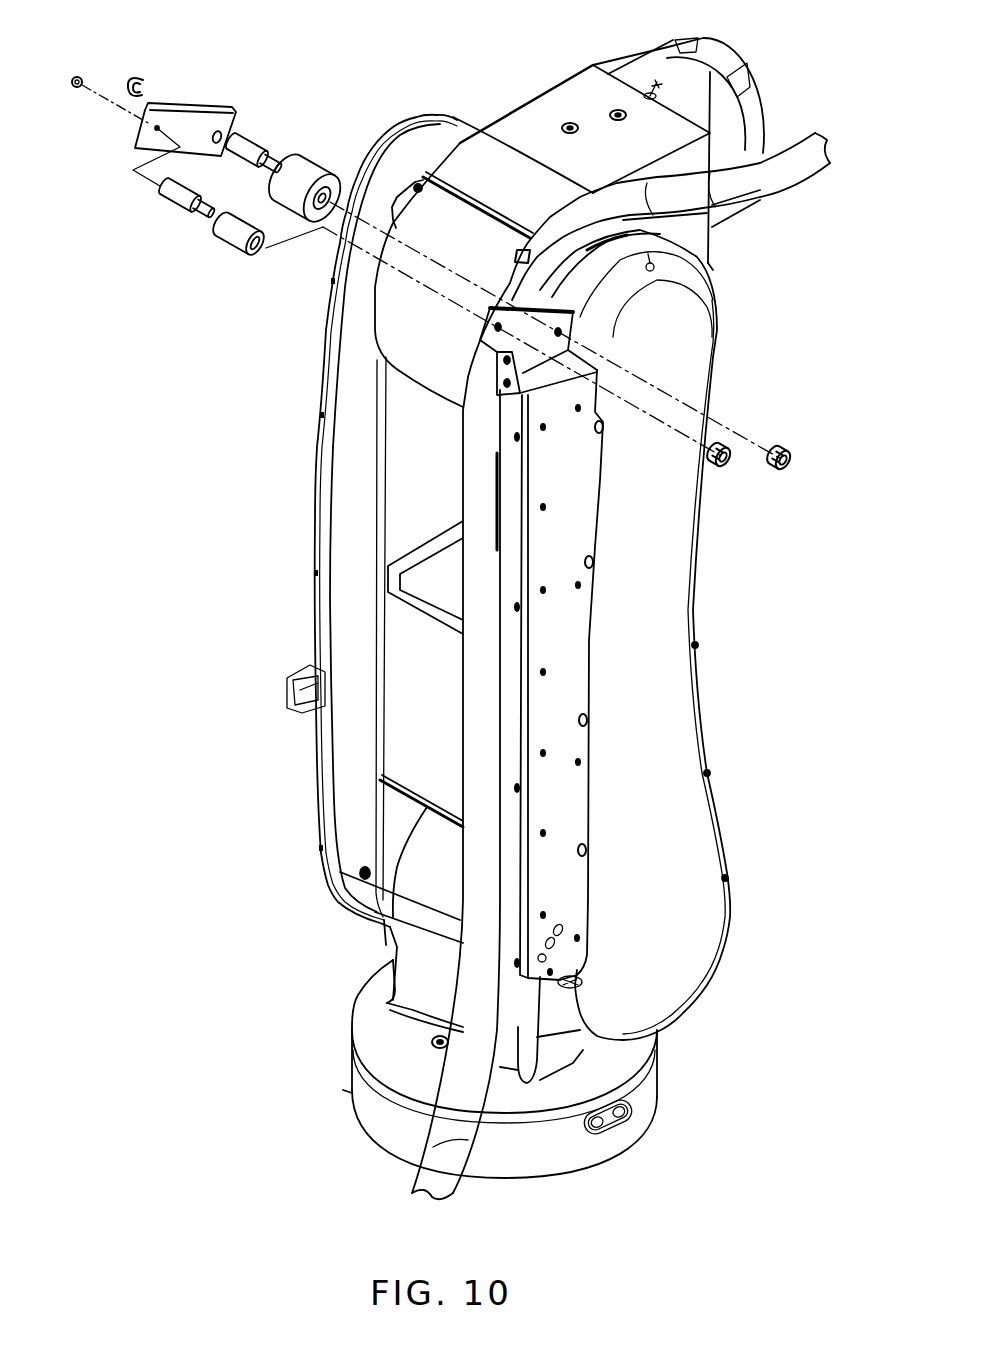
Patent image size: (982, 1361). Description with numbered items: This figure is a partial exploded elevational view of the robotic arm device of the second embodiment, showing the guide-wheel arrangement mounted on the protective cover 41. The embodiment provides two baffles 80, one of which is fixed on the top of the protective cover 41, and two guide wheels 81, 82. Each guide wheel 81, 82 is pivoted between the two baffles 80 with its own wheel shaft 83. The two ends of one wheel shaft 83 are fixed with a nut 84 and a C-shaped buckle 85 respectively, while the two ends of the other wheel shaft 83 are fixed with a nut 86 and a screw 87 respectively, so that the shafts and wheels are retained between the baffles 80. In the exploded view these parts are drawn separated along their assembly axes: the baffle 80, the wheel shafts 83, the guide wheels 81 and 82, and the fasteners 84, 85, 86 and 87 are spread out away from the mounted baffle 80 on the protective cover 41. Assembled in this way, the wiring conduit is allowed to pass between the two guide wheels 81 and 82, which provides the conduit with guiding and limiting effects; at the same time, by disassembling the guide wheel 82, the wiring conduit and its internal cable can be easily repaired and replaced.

The protective cover 41 is at (590, 653).
The baffle 80 is at (188, 127).
The guide wheel 81 is at (313, 163).
The guide wheel 82 is at (233, 233).
The wheel shaft 83 is at (250, 150).
The nut 84 is at (797, 458).
The C-shaped buckle 85 is at (140, 80).
The nut 86 is at (727, 467).
The screw 87 is at (76, 77).